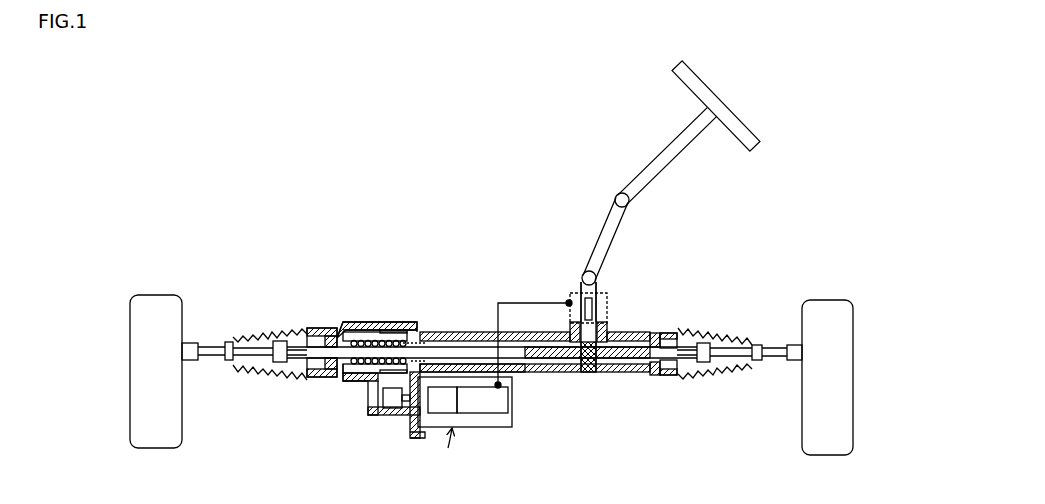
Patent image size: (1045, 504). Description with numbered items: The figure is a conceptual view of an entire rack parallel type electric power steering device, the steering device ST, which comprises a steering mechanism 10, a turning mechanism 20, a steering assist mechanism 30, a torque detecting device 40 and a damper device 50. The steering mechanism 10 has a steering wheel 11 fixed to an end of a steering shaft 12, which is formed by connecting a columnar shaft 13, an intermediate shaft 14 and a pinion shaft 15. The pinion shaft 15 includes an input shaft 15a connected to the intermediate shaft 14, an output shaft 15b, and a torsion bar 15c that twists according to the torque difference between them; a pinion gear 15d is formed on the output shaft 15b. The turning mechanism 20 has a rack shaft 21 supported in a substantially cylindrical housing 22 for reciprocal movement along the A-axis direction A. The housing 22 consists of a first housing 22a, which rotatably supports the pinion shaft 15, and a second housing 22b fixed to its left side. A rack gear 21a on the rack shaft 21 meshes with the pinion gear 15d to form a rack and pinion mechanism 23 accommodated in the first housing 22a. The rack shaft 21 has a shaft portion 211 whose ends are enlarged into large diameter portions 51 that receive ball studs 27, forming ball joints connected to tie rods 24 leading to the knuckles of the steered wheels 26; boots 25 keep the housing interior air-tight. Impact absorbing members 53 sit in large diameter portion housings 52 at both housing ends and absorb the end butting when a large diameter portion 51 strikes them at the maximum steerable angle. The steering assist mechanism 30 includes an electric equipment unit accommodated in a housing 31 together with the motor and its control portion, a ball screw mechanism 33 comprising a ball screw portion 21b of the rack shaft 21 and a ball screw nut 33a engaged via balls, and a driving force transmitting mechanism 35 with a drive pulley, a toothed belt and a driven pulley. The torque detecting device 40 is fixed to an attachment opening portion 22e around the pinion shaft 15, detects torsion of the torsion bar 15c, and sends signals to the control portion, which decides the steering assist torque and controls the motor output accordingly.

The steering device ST is at (343, 133).
The A-axis direction A is at (321, 207).
The steering mechanism 10 is at (594, 157).
The steering wheel 11 is at (703, 82).
The steering shaft 12 is at (646, 230).
The columnar shaft 13 is at (647, 175).
The intermediate shaft 14 is at (615, 222).
The pinion shaft 15 is at (619, 325).
The input shaft 15a is at (595, 290).
The output shaft 15b is at (608, 327).
The torsion bar 15c is at (602, 303).
The pinion gear 15d is at (571, 374).
The turning mechanism 20 is at (423, 232).
The rack shaft 21 is at (492, 360).
The rack gear 21a is at (548, 372).
The ball screw portion 21b is at (360, 362).
The housing 22 is at (492, 328).
The first housing 22a is at (460, 333).
The second housing 22b is at (340, 328).
The attachment opening portion 22e is at (567, 300).
The rack and pinion mechanism 23 is at (567, 373).
The tie rod 24 is at (207, 353).
The boots 25 is at (267, 337).
The steered wheel 26 is at (147, 308).
The ball stud 27 is at (267, 353).
The steering assist mechanism 30 is at (377, 443).
The housing 31 is at (497, 422).
The ball screw mechanism 33 is at (381, 312).
The ball screw nut 33a is at (372, 322).
The driving force transmitting mechanism 35 is at (411, 322).
The torque detecting device 40 is at (567, 293).
The damper device 50 is at (492, 388).
The large diameter portion 51 is at (280, 367).
The large diameter portion housing 52 is at (328, 328).
The impact absorbing member 53 is at (333, 370).
The shaft portion 211 is at (313, 353).